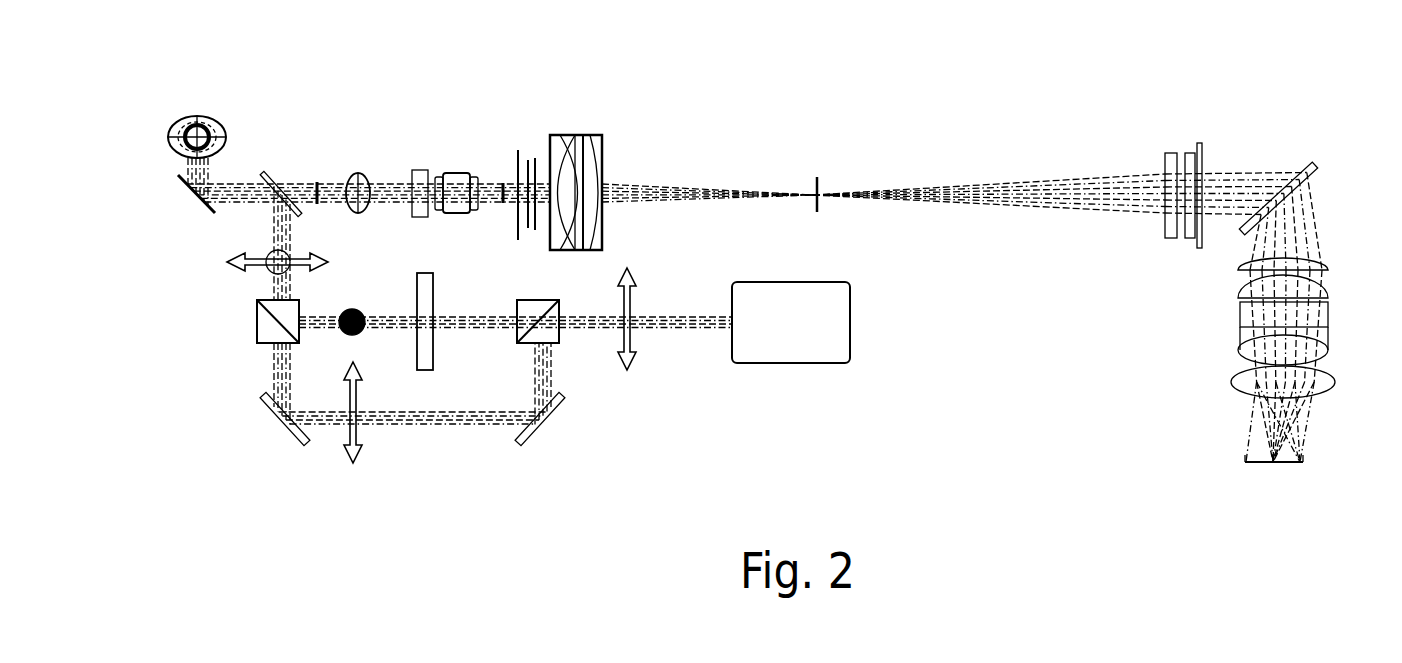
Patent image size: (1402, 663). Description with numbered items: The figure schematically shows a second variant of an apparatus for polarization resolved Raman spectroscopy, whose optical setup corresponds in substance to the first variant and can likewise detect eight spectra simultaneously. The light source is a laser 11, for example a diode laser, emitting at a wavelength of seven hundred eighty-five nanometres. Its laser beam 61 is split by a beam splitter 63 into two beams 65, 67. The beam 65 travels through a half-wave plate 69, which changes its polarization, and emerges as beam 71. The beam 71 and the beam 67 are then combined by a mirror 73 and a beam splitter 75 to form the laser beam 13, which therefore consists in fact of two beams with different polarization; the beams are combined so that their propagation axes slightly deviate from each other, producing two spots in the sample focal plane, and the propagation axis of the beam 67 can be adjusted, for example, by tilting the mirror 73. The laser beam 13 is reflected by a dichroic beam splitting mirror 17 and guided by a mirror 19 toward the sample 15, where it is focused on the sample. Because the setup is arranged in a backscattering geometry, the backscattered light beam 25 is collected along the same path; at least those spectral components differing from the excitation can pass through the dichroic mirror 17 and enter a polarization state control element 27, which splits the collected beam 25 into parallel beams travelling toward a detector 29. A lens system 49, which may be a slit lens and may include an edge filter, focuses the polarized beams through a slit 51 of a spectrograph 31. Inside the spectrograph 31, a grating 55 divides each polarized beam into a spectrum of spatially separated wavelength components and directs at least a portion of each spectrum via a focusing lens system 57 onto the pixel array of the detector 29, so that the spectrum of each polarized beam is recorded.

The laser 11 is at (790, 364).
The laser beam 13 is at (272, 223).
The sample 15 is at (176, 125).
The dichroic beam splitting mirror 17 is at (270, 172).
The mirror 19 is at (196, 193).
The backscattered light beam 25 is at (340, 176).
The polarization state control element 27 is at (441, 151).
The detector 29 is at (1304, 463).
The spectrograph 31 is at (1314, 131).
The lens system 49 is at (611, 149).
The slit 51 is at (820, 186).
The grating 55 is at (1318, 165).
The focusing lens system 57 is at (1326, 280).
The laser beam 61 is at (680, 327).
The beam splitter 63 is at (553, 345).
The beam 65 is at (442, 315).
The beam 67 is at (437, 425).
The half-wave plate 69 is at (418, 273).
The beam 71 is at (318, 317).
The mirror 73 is at (280, 426).
The beam splitter 75 is at (270, 345).